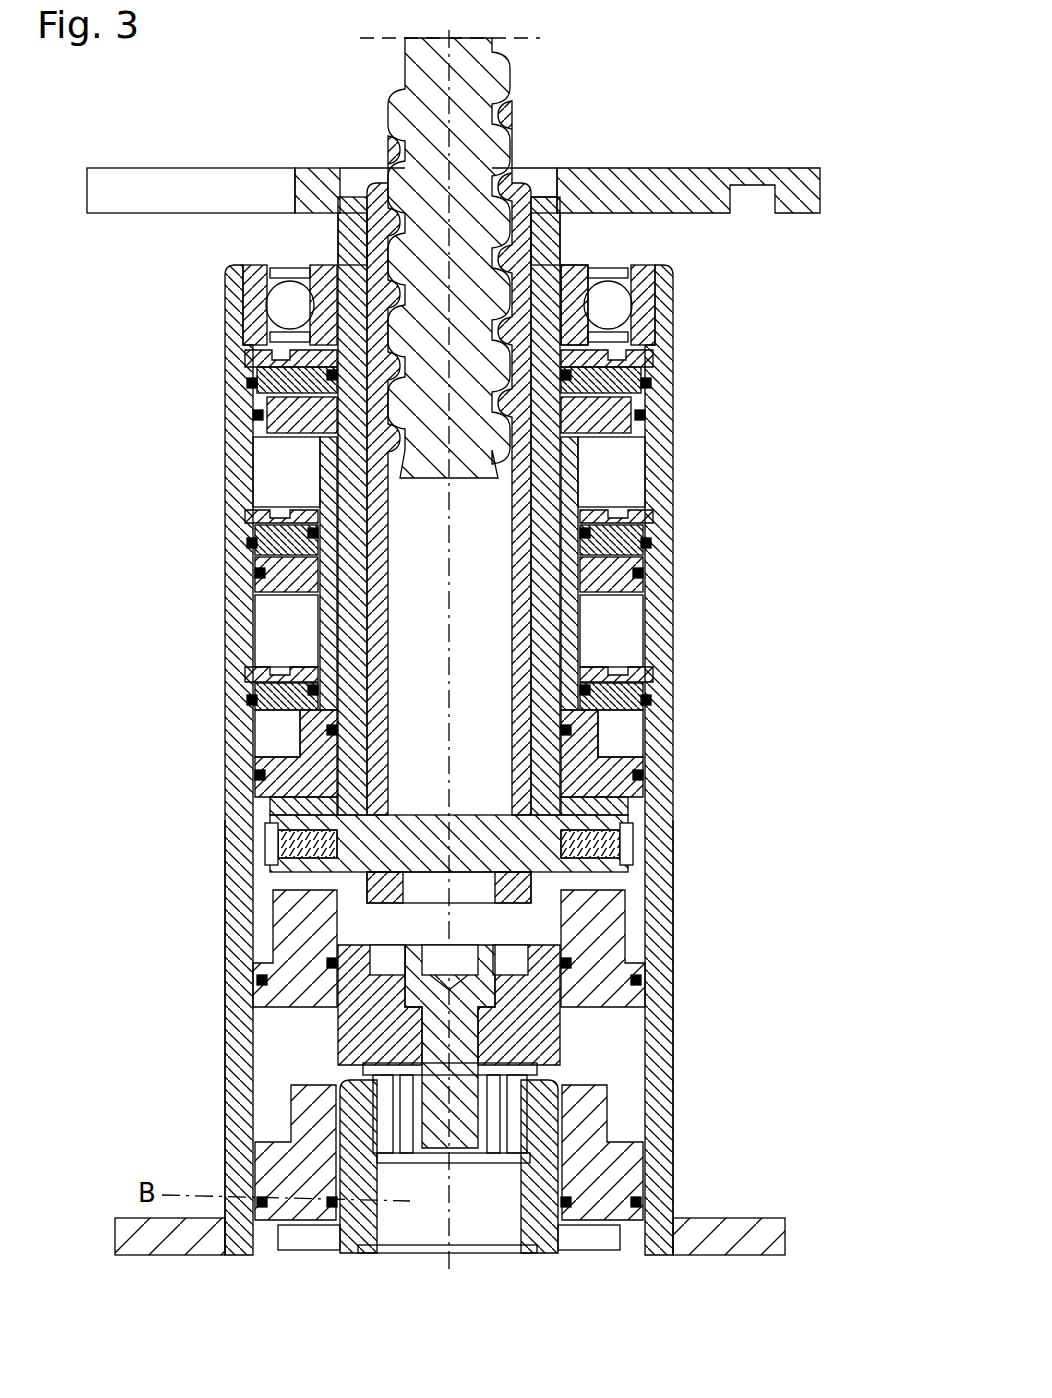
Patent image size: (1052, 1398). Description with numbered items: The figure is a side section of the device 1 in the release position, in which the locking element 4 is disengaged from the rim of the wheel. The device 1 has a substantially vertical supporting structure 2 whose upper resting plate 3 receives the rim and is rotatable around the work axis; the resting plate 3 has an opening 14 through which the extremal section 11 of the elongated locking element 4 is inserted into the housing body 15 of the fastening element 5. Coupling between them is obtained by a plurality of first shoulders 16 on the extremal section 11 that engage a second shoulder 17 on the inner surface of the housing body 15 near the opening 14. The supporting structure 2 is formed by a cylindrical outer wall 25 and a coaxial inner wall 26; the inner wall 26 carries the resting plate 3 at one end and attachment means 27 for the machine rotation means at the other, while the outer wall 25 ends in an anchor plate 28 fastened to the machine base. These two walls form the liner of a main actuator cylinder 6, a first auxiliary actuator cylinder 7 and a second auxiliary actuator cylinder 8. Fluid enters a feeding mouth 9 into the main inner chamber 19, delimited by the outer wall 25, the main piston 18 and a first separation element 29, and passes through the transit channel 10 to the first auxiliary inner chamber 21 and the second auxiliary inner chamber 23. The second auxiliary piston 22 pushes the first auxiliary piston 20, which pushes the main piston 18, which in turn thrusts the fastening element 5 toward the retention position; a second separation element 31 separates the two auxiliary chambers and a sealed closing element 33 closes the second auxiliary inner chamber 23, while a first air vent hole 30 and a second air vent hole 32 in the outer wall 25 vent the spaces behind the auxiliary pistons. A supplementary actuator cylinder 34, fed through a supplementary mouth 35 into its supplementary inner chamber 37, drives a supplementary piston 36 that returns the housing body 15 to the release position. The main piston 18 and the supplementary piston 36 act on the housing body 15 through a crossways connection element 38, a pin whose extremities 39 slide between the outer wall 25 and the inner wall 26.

The device 1 is at (775, 47).
The supporting structure 2 is at (222, 1005).
The resting plate 3 is at (160, 195).
The locking element 4 is at (412, 102).
The fastening element 5 is at (360, 447).
The main actuator cylinder 6 is at (636, 765).
The first auxiliary actuator cylinder 7 is at (633, 566).
The second auxiliary actuator cylinder 8 is at (642, 411).
The feeding mouth 9 is at (650, 726).
The transit channel 10 is at (608, 383).
The extremal section 11 is at (285, 300).
The opening 14 is at (538, 185).
The housing body 15 is at (415, 512).
The first shoulder 16 is at (365, 260).
The second shoulder 17 is at (388, 230).
The main piston 18 is at (265, 820).
The main inner chamber 19 is at (270, 742).
The first auxiliary piston 20 is at (265, 582).
The first auxiliary inner chamber 21 is at (270, 553).
The second auxiliary piston 22 is at (325, 373).
The second auxiliary inner chamber 23 is at (645, 383).
The outer wall 25 is at (655, 845).
The inner wall 26 is at (553, 230).
The attachment means 27 is at (388, 1120).
The anchor plate 28 is at (745, 1240).
The first separation element 29 is at (270, 700).
The first air vent hole 30 is at (650, 672).
The second separation element 31 is at (612, 517).
The second air vent hole 32 is at (658, 505).
The sealed closing element 33 is at (603, 343).
The supplementary actuator cylinder 34 is at (625, 925).
The supplementary mouth 35 is at (660, 1112).
The supplementary piston 36 is at (603, 962).
The supplementary inner chamber 37 is at (620, 1065).
The connection element 38 is at (355, 882).
The extremities 39 is at (265, 855).